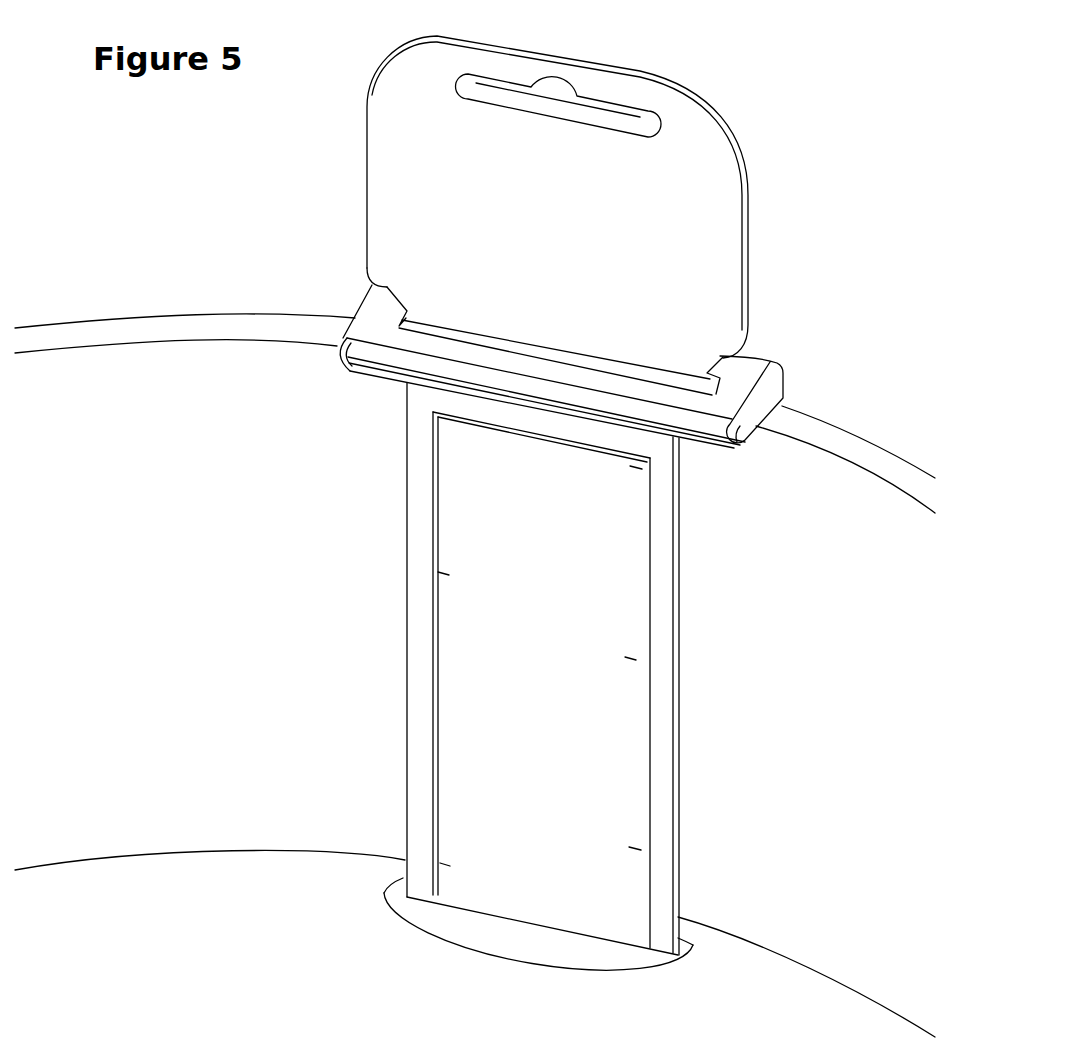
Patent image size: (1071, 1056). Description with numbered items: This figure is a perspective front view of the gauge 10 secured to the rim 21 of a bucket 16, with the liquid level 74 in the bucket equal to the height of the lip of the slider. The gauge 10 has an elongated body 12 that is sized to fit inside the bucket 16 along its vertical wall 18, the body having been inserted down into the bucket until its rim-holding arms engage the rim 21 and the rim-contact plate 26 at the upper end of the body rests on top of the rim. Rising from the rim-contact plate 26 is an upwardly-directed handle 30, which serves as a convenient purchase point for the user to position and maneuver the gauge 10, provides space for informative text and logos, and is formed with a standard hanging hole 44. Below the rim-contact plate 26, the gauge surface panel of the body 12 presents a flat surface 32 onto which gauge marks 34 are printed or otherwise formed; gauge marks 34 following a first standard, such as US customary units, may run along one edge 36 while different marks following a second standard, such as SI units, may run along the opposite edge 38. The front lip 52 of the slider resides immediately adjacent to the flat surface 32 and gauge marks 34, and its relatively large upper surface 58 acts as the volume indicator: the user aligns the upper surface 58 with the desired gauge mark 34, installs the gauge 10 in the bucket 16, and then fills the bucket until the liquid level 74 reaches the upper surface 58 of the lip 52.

The gauge 10 is at (767, 335).
The body 12 is at (413, 492).
The bucket 16 is at (197, 367).
The vertical wall 18 is at (127, 531).
The rim 21 is at (115, 330).
The rim-contact plate 26 is at (370, 323).
The handle 30 is at (395, 218).
The flat surface 32 is at (452, 770).
The gauge marks 34 is at (622, 825).
The edge 36 is at (673, 605).
The opposite edge 38 is at (412, 668).
The hanging hole 44 is at (553, 97).
The front lip 52 is at (448, 946).
The upper surface 58 is at (552, 947).
The liquid level 74 is at (192, 925).